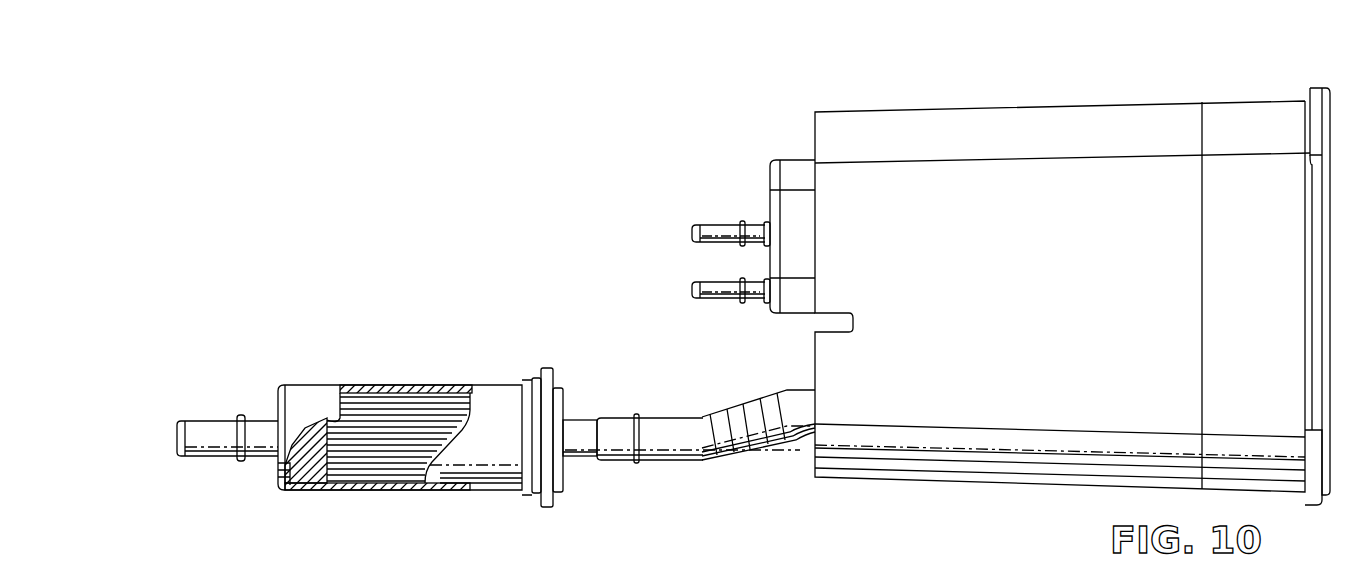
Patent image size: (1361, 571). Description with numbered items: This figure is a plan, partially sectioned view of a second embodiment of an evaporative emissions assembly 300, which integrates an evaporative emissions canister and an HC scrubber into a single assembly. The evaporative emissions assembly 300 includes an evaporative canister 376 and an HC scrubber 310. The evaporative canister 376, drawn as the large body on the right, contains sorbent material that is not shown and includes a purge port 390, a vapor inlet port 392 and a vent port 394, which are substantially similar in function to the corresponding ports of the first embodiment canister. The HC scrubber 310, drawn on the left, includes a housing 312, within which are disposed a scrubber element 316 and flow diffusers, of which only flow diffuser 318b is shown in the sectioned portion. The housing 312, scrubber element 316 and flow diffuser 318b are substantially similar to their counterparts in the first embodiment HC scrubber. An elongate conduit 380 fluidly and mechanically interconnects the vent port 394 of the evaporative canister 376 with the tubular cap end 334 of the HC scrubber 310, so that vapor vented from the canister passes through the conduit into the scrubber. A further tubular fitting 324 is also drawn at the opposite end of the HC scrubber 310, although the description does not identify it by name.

The evaporative emissions assembly 300 is at (566, 86).
The HC scrubber 310 is at (268, 490).
The housing 312 is at (462, 481).
The scrubber element 316 is at (387, 402).
The flow diffuser 318b is at (313, 481).
The inlet tube 324 is at (213, 458).
The tubular cap end 334 is at (583, 452).
The evaporative canister 376 is at (965, 107).
The elongate conduit 380 is at (707, 457).
The purge port 390 is at (724, 225).
The vapor inlet port 392 is at (717, 282).
The vent port 394 is at (800, 438).